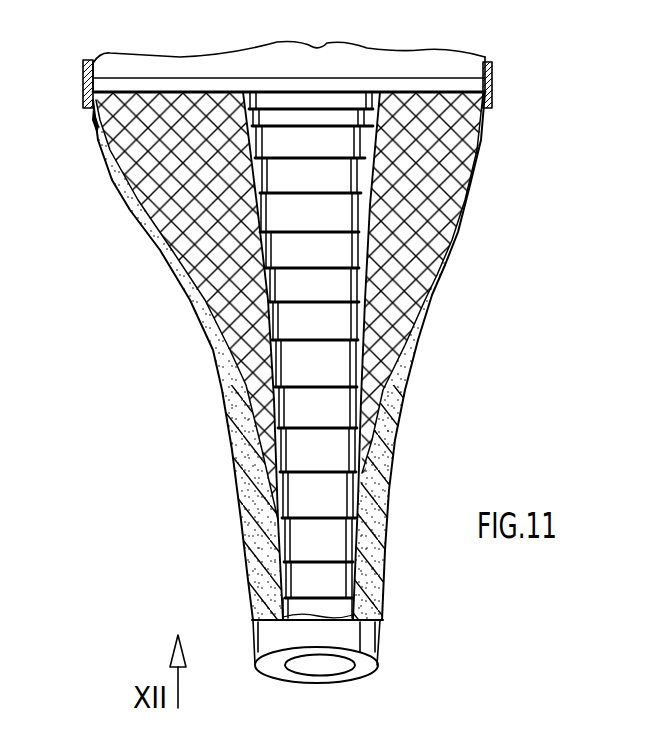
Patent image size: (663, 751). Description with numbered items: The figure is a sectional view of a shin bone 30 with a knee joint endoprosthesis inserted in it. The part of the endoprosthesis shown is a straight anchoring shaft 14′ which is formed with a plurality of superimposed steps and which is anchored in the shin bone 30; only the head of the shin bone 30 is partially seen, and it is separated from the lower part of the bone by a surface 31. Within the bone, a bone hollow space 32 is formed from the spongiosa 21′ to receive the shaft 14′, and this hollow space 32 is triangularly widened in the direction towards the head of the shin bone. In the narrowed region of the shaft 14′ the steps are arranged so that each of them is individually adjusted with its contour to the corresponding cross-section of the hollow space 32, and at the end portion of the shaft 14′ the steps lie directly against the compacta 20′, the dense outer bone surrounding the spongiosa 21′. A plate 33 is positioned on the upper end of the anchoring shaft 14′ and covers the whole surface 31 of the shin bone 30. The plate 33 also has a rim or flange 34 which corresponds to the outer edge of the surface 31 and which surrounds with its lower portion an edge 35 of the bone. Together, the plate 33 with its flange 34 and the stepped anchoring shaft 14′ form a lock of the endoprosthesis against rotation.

The anchoring shaft 14′ is at (340, 412).
The compacta 20′ is at (370, 592).
The spongiosa 21′ is at (422, 181).
The shin bone 30 is at (430, 328).
The surface 31 is at (182, 98).
The bone hollow space 32 is at (241, 92).
The plate 33 is at (325, 86).
The flange 34 is at (85, 78).
The edge of the bone 35 is at (98, 132).